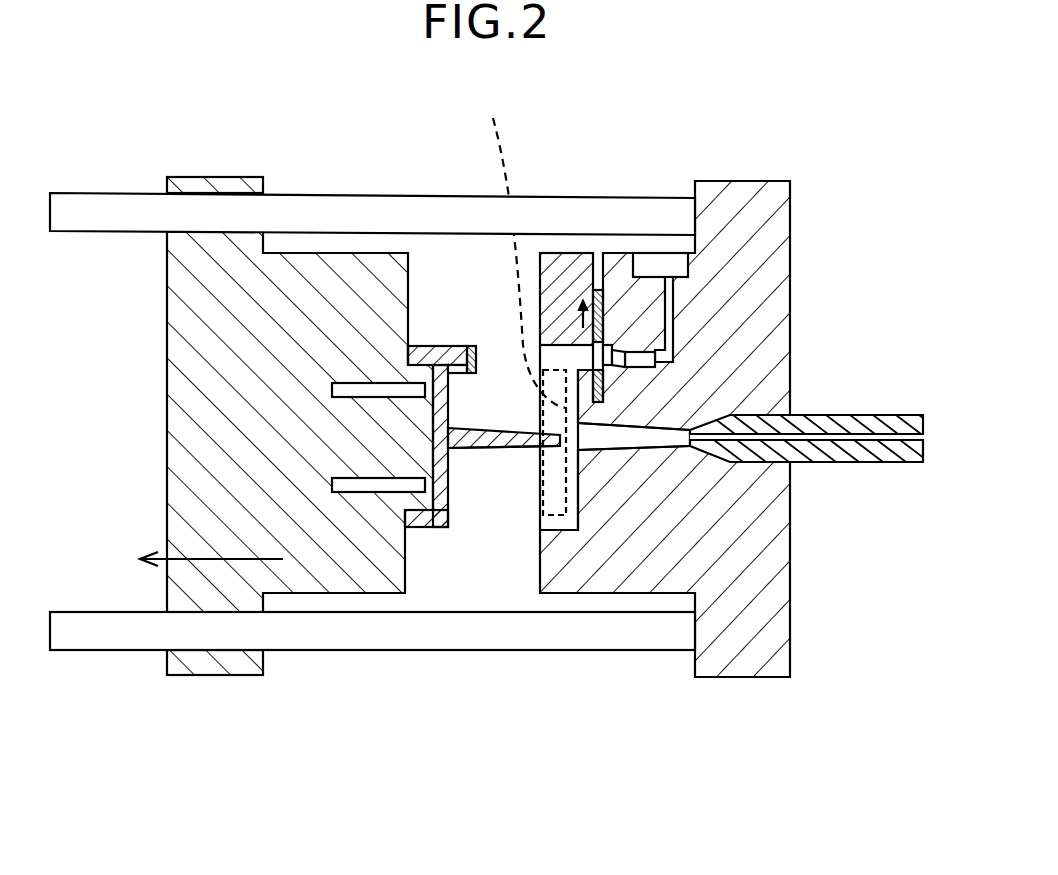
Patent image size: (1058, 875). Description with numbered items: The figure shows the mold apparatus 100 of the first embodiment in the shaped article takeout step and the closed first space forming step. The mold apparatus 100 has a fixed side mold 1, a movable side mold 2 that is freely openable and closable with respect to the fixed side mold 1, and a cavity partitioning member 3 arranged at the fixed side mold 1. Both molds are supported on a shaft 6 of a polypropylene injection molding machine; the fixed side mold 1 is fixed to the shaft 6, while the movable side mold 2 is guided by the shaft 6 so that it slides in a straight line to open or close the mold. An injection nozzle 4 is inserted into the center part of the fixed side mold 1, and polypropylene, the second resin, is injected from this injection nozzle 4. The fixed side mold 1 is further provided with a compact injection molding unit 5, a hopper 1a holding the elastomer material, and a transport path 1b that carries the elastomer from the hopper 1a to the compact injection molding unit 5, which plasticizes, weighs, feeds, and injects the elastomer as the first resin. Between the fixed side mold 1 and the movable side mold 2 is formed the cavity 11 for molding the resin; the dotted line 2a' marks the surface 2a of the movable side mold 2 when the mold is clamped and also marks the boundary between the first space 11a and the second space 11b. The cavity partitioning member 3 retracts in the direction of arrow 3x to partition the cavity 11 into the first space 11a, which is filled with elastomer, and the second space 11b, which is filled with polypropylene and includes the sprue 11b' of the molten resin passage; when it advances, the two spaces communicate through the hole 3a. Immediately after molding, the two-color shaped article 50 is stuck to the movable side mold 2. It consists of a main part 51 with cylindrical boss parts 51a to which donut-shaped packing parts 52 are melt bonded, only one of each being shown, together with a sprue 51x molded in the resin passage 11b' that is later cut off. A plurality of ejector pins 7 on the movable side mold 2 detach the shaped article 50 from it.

The fixed side mold 1 is at (740, 204).
The hopper 1a is at (655, 265).
The transport path 1b is at (672, 335).
The movable side mold 2 is at (313, 272).
The surface of the movable side mold 2a is at (428, 225).
The dotted line 2a' is at (520, 247).
The cavity partitioning member 3 is at (604, 284).
The hole 3a is at (578, 340).
The arrow 3x is at (590, 292).
The injection nozzle 4 is at (888, 467).
The compact injection molding unit 5 is at (655, 356).
The shaft 6 is at (87, 203).
The ejector pins 7 is at (350, 487).
The cavity 11 is at (578, 488).
The first space 11a is at (610, 372).
The second space 11b is at (560, 568).
The sprue 11b' is at (640, 594).
The two-color shaped article 50 is at (450, 500).
The main part 51 is at (432, 522).
The boss part 51a is at (438, 346).
The sprue 51x is at (505, 448).
The packing part 52 is at (474, 346).
The mold apparatus 100 is at (864, 97).